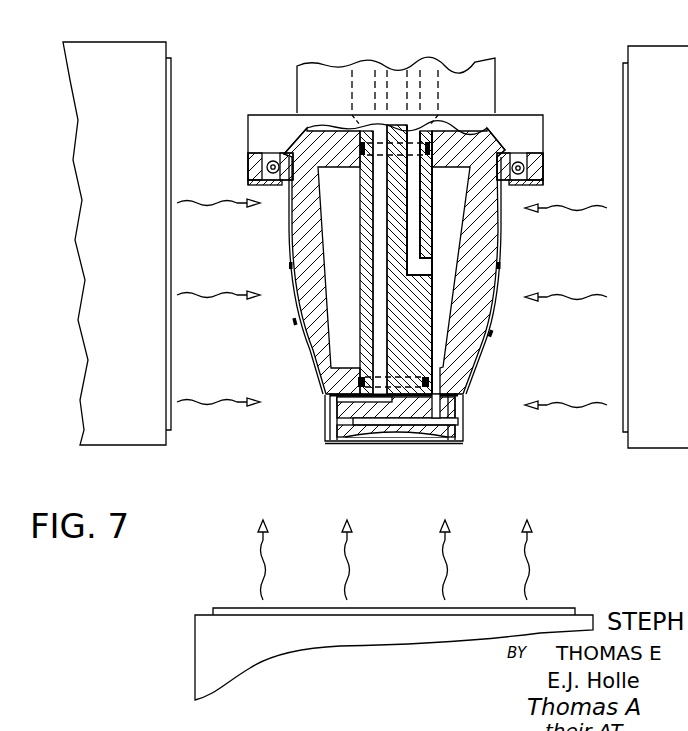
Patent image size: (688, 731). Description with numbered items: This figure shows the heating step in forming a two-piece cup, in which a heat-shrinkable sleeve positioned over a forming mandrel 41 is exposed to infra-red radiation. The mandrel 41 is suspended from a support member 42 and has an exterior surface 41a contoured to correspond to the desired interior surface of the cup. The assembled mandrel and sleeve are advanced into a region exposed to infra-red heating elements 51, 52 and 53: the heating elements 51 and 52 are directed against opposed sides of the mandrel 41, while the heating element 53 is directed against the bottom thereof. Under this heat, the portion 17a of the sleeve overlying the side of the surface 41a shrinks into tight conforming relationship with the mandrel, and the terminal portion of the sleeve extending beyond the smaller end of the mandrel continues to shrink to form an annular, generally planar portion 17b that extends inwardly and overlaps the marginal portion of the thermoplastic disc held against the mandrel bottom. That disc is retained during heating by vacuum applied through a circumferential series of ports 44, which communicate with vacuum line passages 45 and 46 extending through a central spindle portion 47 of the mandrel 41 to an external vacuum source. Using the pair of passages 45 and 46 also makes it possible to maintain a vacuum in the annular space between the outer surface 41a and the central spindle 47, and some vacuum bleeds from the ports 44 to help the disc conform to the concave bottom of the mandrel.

The infra-red heating element 51 is at (150, 55).
The infra-red heating element 52 is at (631, 60).
The support member 42 is at (533, 131).
The forming mandrel 41 is at (502, 407).
The exterior surface of mandrel 41a is at (490, 312).
The portion of sleeve 17a is at (488, 340).
The vacuum line passage 45 is at (375, 258).
The vacuum line passage 46 is at (418, 220).
The central spindle portion of mandrel 47 is at (432, 285).
The ports 44 is at (337, 433).
The annular planar portion of sleeve 17b is at (450, 438).
The infra-red heating element 53 is at (590, 612).